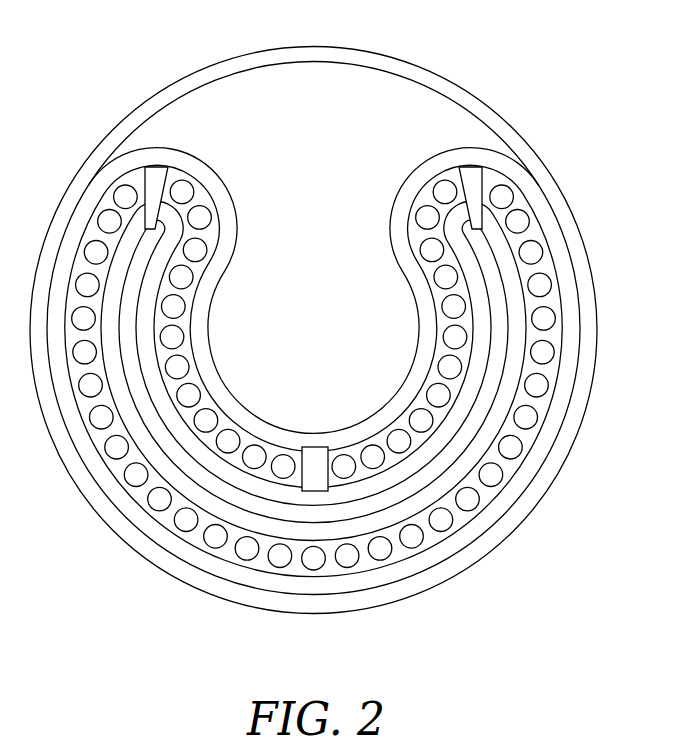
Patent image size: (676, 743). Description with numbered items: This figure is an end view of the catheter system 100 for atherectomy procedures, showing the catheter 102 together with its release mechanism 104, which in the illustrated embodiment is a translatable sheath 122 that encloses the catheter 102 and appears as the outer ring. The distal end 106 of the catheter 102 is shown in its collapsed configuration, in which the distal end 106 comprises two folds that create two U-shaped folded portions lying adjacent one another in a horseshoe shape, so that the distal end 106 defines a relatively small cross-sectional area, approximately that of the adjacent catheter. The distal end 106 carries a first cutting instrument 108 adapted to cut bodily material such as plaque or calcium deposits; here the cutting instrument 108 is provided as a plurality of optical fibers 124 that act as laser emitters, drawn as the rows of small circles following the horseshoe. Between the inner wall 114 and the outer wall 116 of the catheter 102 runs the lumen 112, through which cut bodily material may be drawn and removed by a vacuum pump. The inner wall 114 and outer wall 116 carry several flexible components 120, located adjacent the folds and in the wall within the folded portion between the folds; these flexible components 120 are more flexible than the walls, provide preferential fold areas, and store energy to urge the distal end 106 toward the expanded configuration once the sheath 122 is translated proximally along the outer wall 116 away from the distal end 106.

The catheter system 100 is at (116, 63).
The catheter 102 is at (183, 151).
The release mechanism 104 is at (247, 54).
The distal end 106 is at (443, 151).
The first cutting instrument 108 is at (553, 285).
The lumen 112 is at (378, 502).
The inner wall 114 is at (462, 430).
The outer wall 116 is at (405, 387).
The flexible components 120 is at (144, 176).
The sheath 122 is at (364, 51).
The optical fibers 124 is at (272, 566).